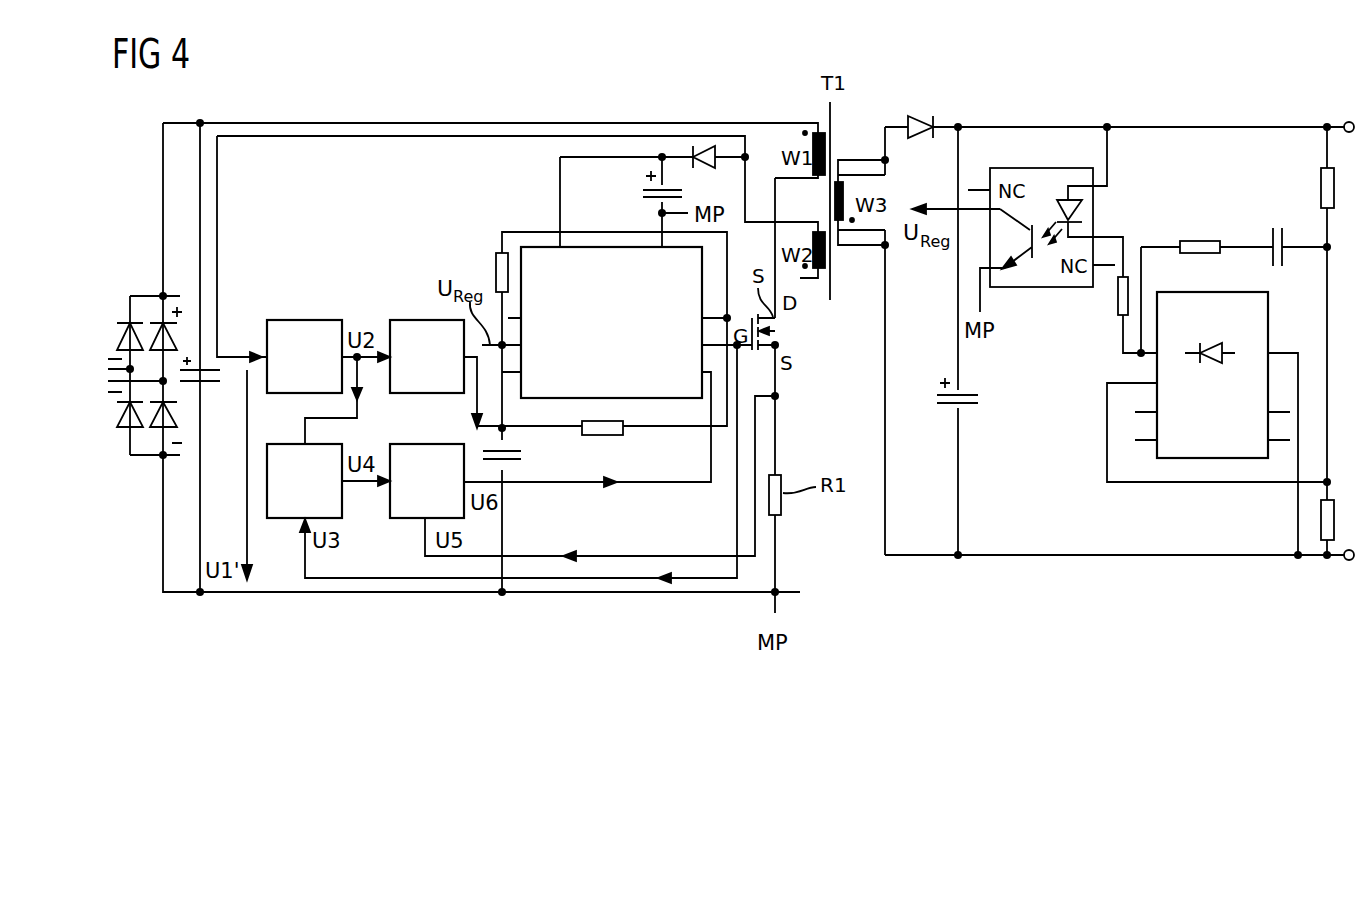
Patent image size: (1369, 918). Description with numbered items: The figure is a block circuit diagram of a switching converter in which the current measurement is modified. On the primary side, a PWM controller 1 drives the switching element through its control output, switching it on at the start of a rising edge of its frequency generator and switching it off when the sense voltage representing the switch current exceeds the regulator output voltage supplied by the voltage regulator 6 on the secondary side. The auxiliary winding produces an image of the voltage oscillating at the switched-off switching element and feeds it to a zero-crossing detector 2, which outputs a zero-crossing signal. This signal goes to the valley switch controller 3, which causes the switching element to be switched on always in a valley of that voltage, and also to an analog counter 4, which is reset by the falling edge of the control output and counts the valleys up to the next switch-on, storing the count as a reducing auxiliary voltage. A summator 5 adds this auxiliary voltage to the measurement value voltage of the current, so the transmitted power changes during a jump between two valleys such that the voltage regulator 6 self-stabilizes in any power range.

The PWM controller 1 is at (612, 247).
The zero-crossing detector 2 is at (303, 320).
The valley switch controller 3 is at (429, 320).
The analog counter 4 is at (285, 518).
The summator 5 is at (412, 518).
The voltage regulator 6 is at (1268, 322).